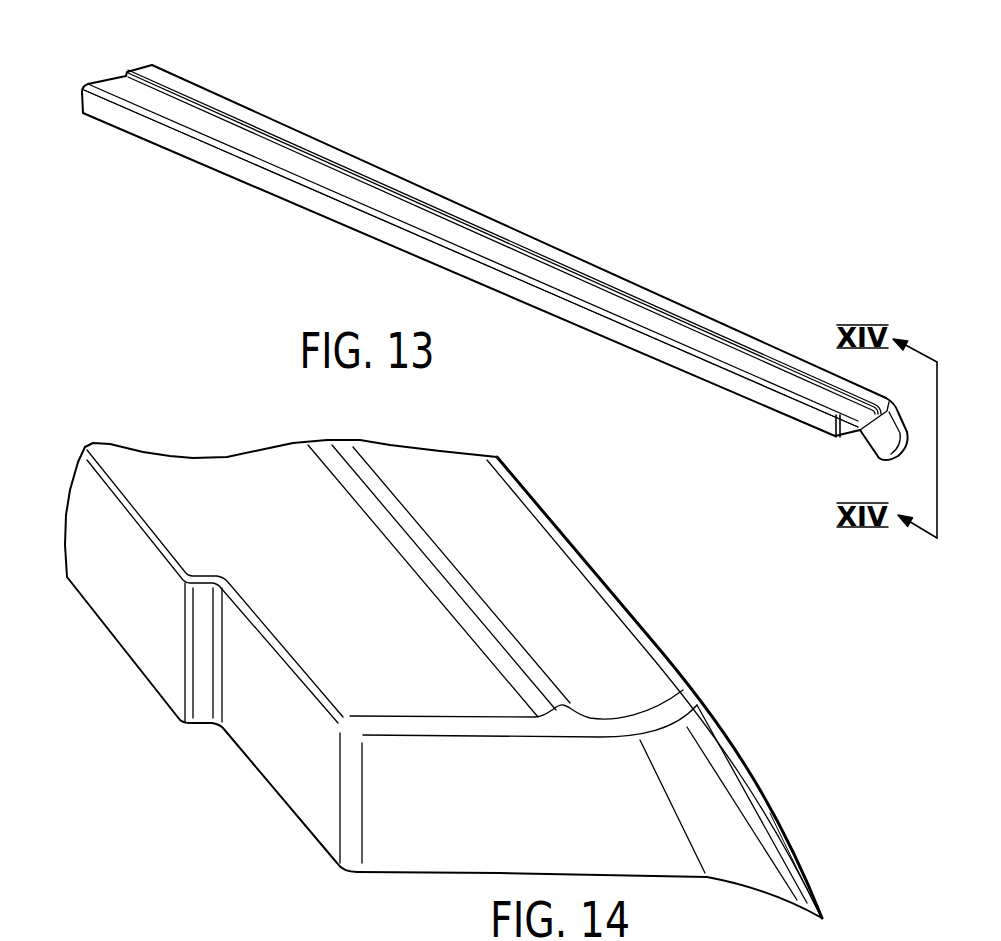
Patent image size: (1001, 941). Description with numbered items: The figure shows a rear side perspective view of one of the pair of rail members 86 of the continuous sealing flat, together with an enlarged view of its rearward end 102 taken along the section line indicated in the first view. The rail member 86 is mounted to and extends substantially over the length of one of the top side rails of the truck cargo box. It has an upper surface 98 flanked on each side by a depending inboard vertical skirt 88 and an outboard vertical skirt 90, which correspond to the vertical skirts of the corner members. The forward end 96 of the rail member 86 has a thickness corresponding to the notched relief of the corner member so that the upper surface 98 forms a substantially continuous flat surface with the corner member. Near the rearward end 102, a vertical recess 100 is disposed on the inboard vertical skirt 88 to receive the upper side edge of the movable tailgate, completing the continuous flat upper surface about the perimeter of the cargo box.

In FIG. 13, the rail member 86 is at (672, 322).
In FIG. 14, the rail member 86 is at (702, 773).
In FIG. 13, the inboard vertical skirt 88 is at (728, 377).
In FIG. 14, the inboard vertical skirt 88 is at (137, 618).
In FIG. 14, the outboard vertical skirt 90 is at (783, 827).
In FIG. 13, the forward end 96 is at (185, 90).
In FIG. 13, the upper surface 98 is at (537, 268).
In FIG. 14, the upper surface 98 is at (166, 473).
In FIG. 13, the vertical recess 100 is at (857, 435).
In FIG. 14, the vertical recess 100 is at (280, 773).
In FIG. 13, the rearward end 102 is at (768, 346).
In FIG. 14, the rearward end 102 is at (623, 665).